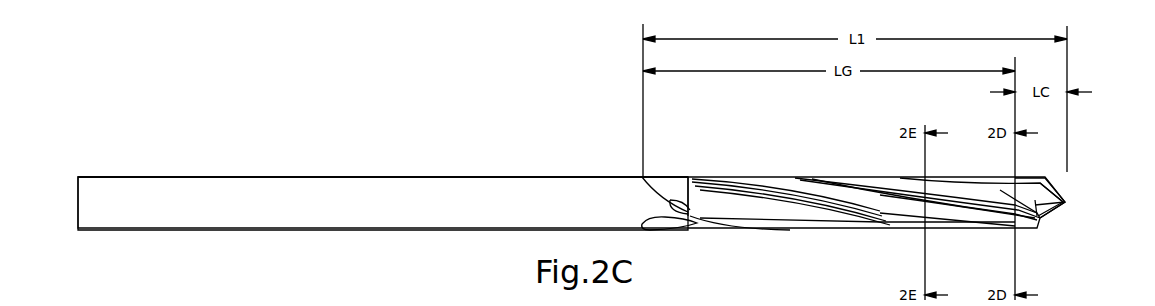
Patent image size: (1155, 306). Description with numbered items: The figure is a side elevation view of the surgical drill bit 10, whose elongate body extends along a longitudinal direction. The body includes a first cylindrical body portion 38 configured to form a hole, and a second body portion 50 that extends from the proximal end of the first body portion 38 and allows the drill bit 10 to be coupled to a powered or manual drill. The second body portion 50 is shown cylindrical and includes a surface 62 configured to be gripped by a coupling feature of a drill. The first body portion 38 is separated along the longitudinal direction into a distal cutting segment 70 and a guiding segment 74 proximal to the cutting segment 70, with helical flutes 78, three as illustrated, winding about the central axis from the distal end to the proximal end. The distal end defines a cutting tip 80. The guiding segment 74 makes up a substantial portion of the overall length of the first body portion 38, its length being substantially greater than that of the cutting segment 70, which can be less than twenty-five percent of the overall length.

The surgical drill bit 10 is at (350, 147).
The surface 62 is at (118, 193).
The second body portion 50 is at (191, 184).
The guiding segment 74 is at (717, 205).
The first cylindrical body portion 38 is at (826, 176).
The helical flutes 78 is at (867, 197).
The cutting segment 70 is at (1030, 181).
The cutting tip 80 is at (1065, 204).